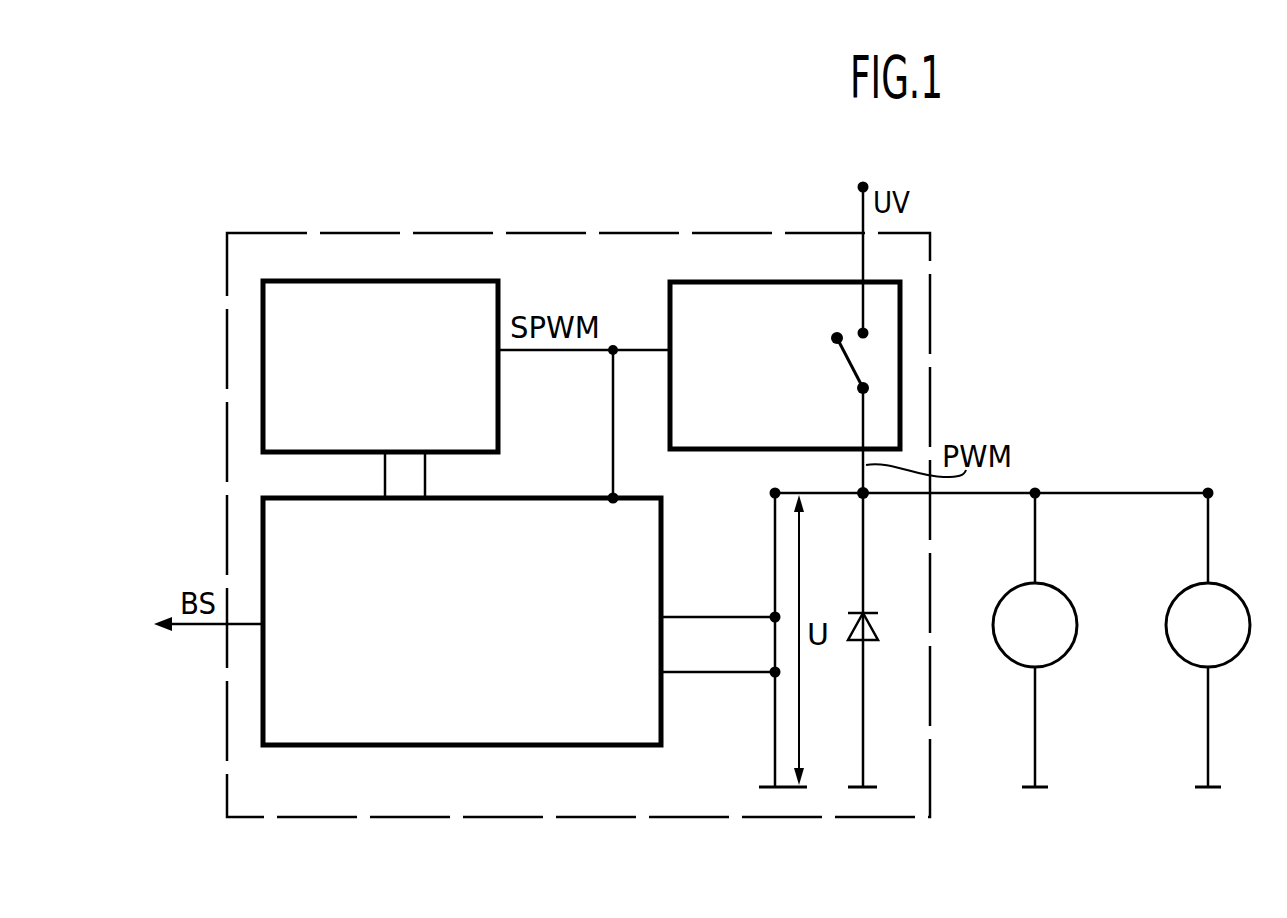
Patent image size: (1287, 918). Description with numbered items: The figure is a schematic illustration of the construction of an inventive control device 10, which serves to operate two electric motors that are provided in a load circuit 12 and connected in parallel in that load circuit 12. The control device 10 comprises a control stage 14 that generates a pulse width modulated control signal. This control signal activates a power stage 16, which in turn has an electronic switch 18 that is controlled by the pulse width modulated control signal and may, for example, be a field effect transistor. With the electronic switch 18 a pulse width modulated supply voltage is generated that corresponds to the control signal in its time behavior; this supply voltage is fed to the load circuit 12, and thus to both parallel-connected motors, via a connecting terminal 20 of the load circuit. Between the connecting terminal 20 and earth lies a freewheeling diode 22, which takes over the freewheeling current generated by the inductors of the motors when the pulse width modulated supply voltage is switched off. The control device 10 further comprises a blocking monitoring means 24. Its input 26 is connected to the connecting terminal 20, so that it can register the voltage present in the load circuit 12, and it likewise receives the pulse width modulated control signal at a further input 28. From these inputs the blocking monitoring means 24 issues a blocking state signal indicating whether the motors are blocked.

The control device 10 is at (578, 455).
The load circuit 12 is at (1118, 482).
The control stage 14 is at (398, 313).
The power stage 16 is at (787, 310).
The electronic switch 18 is at (850, 363).
The connecting terminal 20 is at (866, 497).
The freewheeling diode 22 is at (880, 628).
The blocking monitoring means 24 is at (362, 720).
The input 26 is at (661, 617).
The input 28 is at (612, 501).